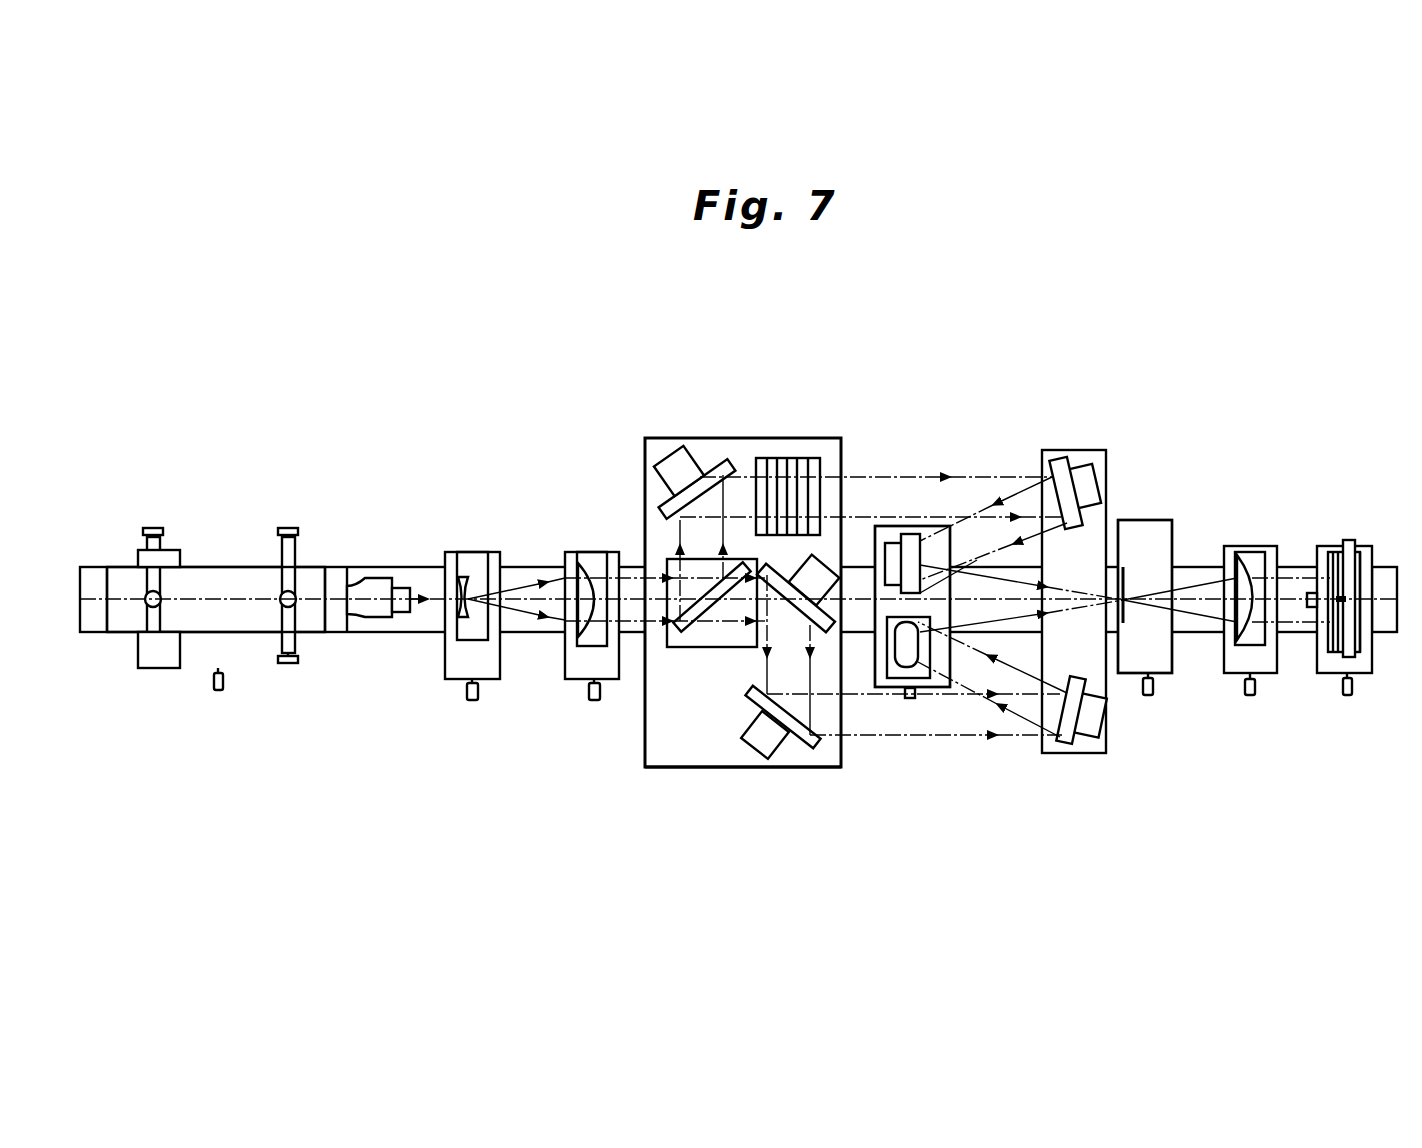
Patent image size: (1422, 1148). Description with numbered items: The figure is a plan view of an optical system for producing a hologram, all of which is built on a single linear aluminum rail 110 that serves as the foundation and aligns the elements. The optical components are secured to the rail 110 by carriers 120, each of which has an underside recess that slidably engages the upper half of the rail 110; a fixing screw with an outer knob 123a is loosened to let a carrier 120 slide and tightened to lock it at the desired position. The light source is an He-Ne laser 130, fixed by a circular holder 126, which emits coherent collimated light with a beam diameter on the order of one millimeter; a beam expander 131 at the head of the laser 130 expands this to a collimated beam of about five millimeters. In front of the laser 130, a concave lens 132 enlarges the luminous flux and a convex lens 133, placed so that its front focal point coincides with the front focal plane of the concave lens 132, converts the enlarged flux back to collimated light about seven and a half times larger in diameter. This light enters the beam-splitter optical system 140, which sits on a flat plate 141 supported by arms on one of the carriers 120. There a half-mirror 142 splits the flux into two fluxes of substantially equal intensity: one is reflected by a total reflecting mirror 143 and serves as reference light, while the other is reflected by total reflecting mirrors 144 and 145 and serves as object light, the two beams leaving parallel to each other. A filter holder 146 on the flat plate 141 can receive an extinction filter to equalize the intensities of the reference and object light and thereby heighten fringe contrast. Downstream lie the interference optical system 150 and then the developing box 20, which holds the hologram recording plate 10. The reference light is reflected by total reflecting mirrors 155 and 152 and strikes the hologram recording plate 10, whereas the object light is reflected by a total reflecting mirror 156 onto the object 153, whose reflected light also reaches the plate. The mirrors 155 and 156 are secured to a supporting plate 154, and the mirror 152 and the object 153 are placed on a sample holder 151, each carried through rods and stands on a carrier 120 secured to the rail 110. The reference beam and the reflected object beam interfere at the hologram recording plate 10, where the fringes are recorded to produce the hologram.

The hologram recording plate 10 is at (1128, 573).
The developing box 20 is at (1148, 520).
The rail 110 is at (92, 627).
The carrier 120 is at (207, 658).
The knob 123a is at (222, 690).
The circular holder 126 is at (148, 545).
The He-Ne laser 130 is at (258, 580).
The beam expander 131 is at (380, 575).
The concave lens 132 is at (462, 578).
The convex lens 133 is at (582, 580).
The beam-splitter optical system 140 is at (737, 772).
The flat plate 141 is at (673, 745).
The half-mirror 142 is at (693, 635).
The total reflecting mirror 143 is at (722, 457).
The total reflecting mirror 144 is at (797, 607).
The total reflecting mirror 145 is at (795, 750).
The filter holder 146 is at (808, 470).
The interference optical system 150 is at (955, 703).
The sample holder 151 is at (935, 530).
The total reflecting mirror 152 is at (908, 540).
The object 153 is at (903, 650).
The supporting plate 154 is at (1090, 465).
The total reflecting mirror 155 is at (1060, 468).
The total reflecting mirror 156 is at (1062, 742).